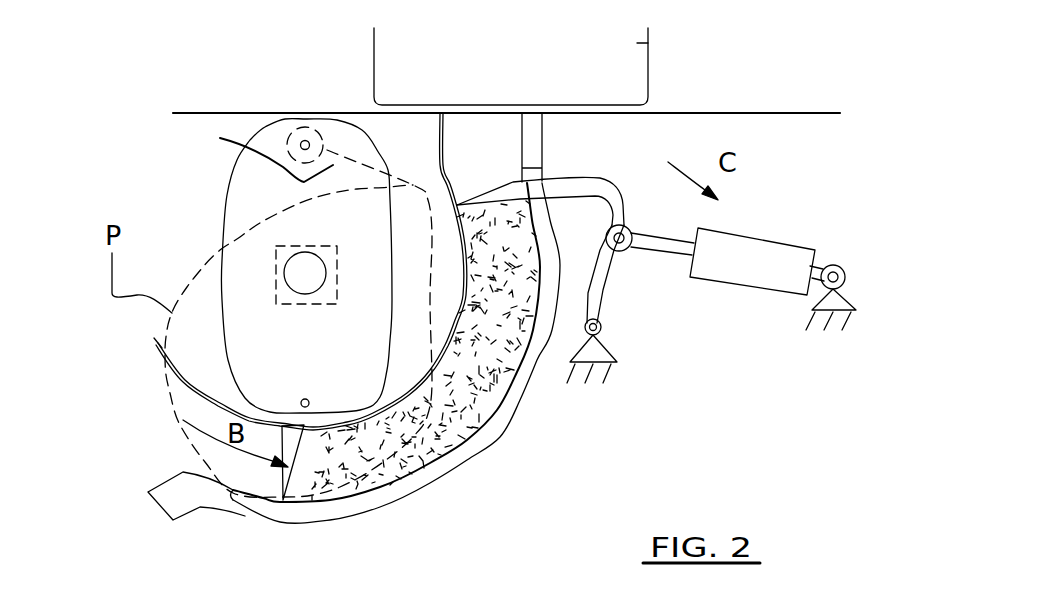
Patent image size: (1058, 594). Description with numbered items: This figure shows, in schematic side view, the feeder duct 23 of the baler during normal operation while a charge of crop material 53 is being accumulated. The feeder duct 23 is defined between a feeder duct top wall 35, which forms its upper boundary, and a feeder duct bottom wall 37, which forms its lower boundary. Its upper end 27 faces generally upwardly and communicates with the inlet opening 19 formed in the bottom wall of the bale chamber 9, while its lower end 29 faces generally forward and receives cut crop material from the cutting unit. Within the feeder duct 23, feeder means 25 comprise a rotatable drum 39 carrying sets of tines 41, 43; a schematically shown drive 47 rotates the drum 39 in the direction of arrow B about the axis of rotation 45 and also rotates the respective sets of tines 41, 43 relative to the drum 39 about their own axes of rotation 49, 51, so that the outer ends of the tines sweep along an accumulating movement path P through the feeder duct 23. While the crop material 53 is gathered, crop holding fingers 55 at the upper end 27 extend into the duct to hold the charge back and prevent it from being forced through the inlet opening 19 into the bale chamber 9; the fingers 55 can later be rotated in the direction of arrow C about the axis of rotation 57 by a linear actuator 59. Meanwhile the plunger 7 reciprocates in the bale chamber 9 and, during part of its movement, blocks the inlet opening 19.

The plunger 7 is at (650, 43).
The bale chamber 9 is at (757, 84).
The inlet opening 19 is at (495, 111).
The feeder duct 23 is at (480, 452).
The feeder means 25 is at (193, 234).
The upper end 27 is at (522, 159).
The lower end 29 is at (158, 410).
The feeder duct top wall 35 is at (448, 327).
The feeder duct bottom wall 37 is at (497, 420).
The rotatable drum 39 is at (235, 183).
The set of tines 41 is at (247, 488).
The set of tines 43 is at (263, 153).
The axis of rotation 45 is at (305, 268).
The drive 47 is at (293, 303).
The axis of rotation 49 is at (305, 399).
The axis of rotation 51 is at (305, 140).
The crop material 53 is at (417, 440).
The crop holding fingers 55 is at (610, 193).
The axis of rotation 57 is at (600, 330).
The linear actuator 59 is at (742, 273).